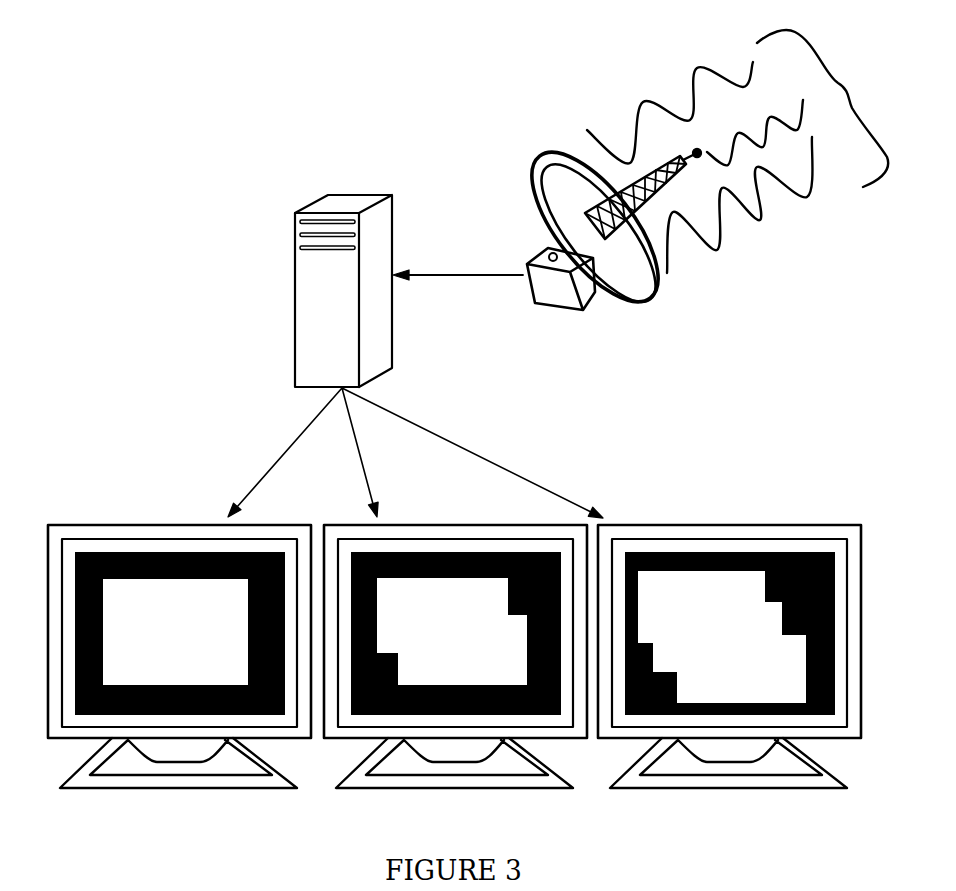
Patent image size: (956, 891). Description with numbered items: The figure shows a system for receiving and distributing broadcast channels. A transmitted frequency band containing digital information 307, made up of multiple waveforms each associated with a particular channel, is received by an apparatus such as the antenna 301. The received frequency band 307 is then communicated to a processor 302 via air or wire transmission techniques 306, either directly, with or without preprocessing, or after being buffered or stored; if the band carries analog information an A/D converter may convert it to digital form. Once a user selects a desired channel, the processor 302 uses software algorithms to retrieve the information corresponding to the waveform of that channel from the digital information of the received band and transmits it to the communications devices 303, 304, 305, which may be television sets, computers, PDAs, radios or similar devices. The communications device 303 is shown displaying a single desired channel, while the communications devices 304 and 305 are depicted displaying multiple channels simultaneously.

The antenna 301 is at (537, 207).
The processor 302 is at (292, 236).
The communications device 303 is at (205, 543).
The communications device 304 is at (498, 543).
The communications device 305 is at (733, 545).
The air or wire transmission techniques 306 is at (478, 273).
The transmitted frequency band containing digital information 307 is at (838, 83).